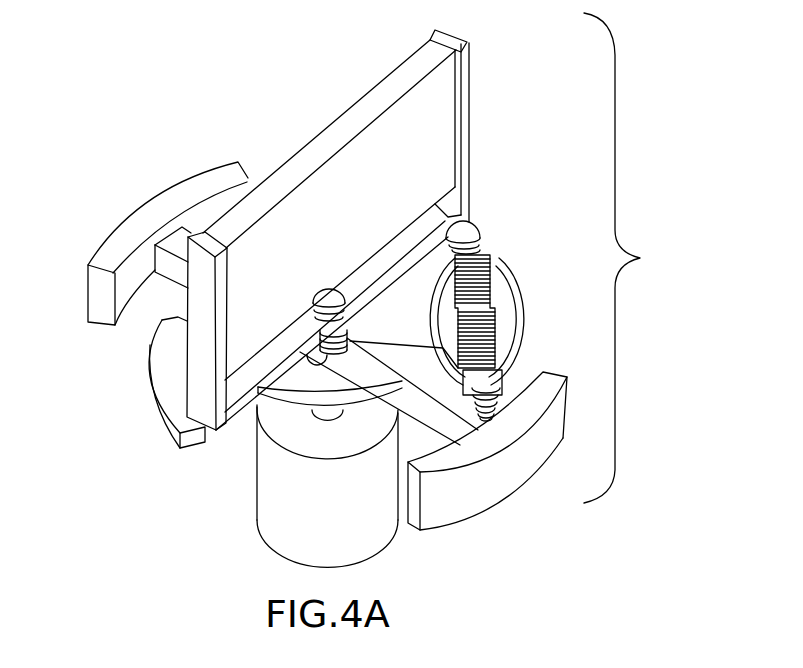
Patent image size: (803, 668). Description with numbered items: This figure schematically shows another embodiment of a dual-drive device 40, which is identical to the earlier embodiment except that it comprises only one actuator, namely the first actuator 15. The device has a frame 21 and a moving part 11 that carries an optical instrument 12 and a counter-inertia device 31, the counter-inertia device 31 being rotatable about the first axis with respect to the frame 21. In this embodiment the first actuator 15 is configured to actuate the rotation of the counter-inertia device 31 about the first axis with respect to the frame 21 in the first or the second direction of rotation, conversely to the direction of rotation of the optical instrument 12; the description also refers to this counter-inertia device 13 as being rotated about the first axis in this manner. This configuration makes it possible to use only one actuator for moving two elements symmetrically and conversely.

The moving part 11 is at (642, 258).
The optical instrument 12 is at (336, 133).
The counter-inertia device 13 is at (262, 462).
The first actuator 15 is at (490, 298).
The frame 21 is at (153, 405).
The counter-inertia device 31 is at (168, 217).
The dual-drive device 40 is at (62, 226).